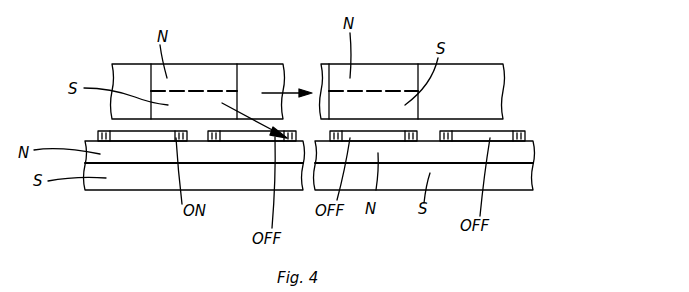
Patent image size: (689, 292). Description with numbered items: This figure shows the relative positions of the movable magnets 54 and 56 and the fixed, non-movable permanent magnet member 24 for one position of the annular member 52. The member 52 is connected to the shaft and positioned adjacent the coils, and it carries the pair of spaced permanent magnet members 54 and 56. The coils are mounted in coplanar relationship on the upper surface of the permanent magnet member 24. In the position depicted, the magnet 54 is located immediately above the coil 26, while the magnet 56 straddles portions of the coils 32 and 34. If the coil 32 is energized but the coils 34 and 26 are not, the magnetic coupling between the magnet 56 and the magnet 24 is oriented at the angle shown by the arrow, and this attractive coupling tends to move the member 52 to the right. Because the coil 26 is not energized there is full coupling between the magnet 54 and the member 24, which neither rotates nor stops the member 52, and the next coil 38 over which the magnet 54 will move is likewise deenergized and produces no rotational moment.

The permanent magnet member 24 is at (160, 178).
The coil 26 is at (393, 137).
The coil 32 is at (105, 128).
The coil 34 is at (246, 137).
The coil 38 is at (517, 135).
The annular member 52 is at (265, 78).
The permanent magnet member 54 is at (388, 78).
The permanent magnet member 56 is at (220, 75).